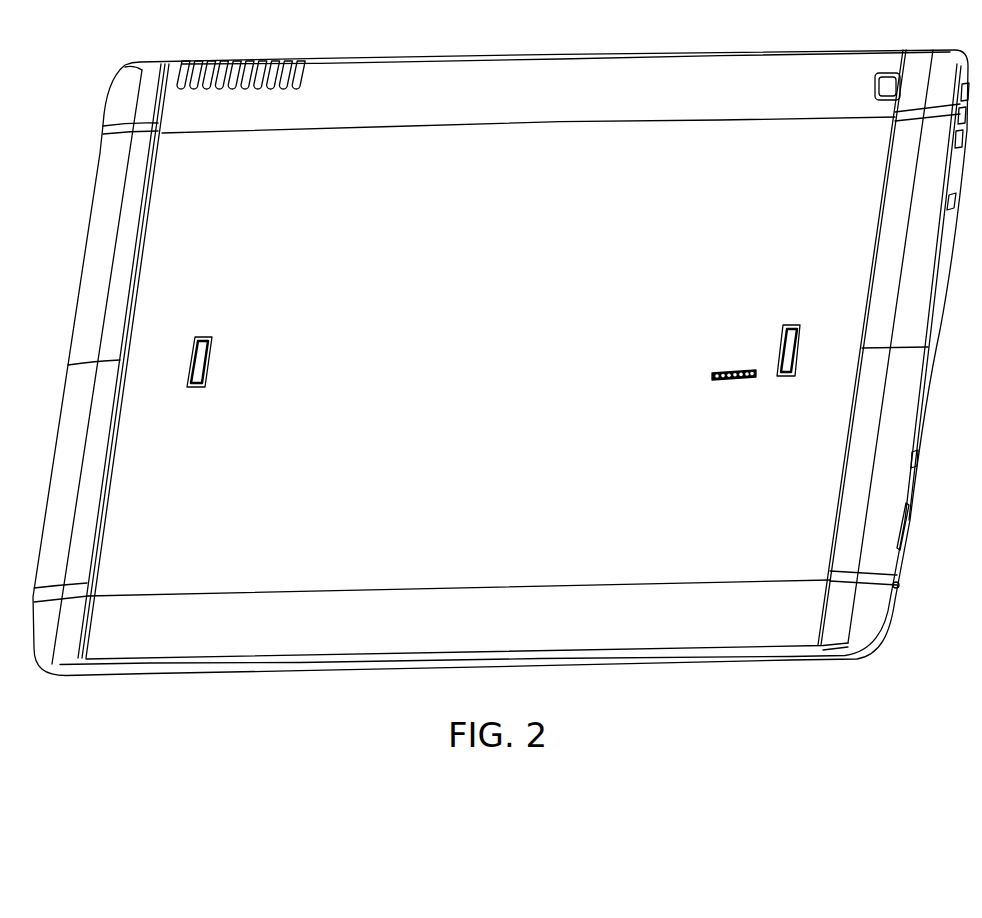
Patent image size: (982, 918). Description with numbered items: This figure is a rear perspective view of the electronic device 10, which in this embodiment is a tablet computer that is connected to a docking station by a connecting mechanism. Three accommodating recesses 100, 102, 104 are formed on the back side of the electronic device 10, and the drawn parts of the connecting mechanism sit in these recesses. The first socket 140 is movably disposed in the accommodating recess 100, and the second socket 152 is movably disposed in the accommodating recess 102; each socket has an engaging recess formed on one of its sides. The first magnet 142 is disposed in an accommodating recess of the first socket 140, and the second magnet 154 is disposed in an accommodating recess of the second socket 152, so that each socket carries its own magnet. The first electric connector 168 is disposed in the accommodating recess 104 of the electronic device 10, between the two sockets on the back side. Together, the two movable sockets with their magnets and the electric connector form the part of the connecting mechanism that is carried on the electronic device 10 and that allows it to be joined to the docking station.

The electronic device 10 is at (720, 50).
The accommodating recess 100 is at (215, 327).
The first socket 140 is at (210, 363).
The first magnet 142 is at (195, 358).
The accommodating recess 102 is at (801, 316).
The second socket 152 is at (784, 344).
The second magnet 154 is at (792, 353).
The accommodating recess 104 is at (742, 392).
The first electric connector 168 is at (718, 371).